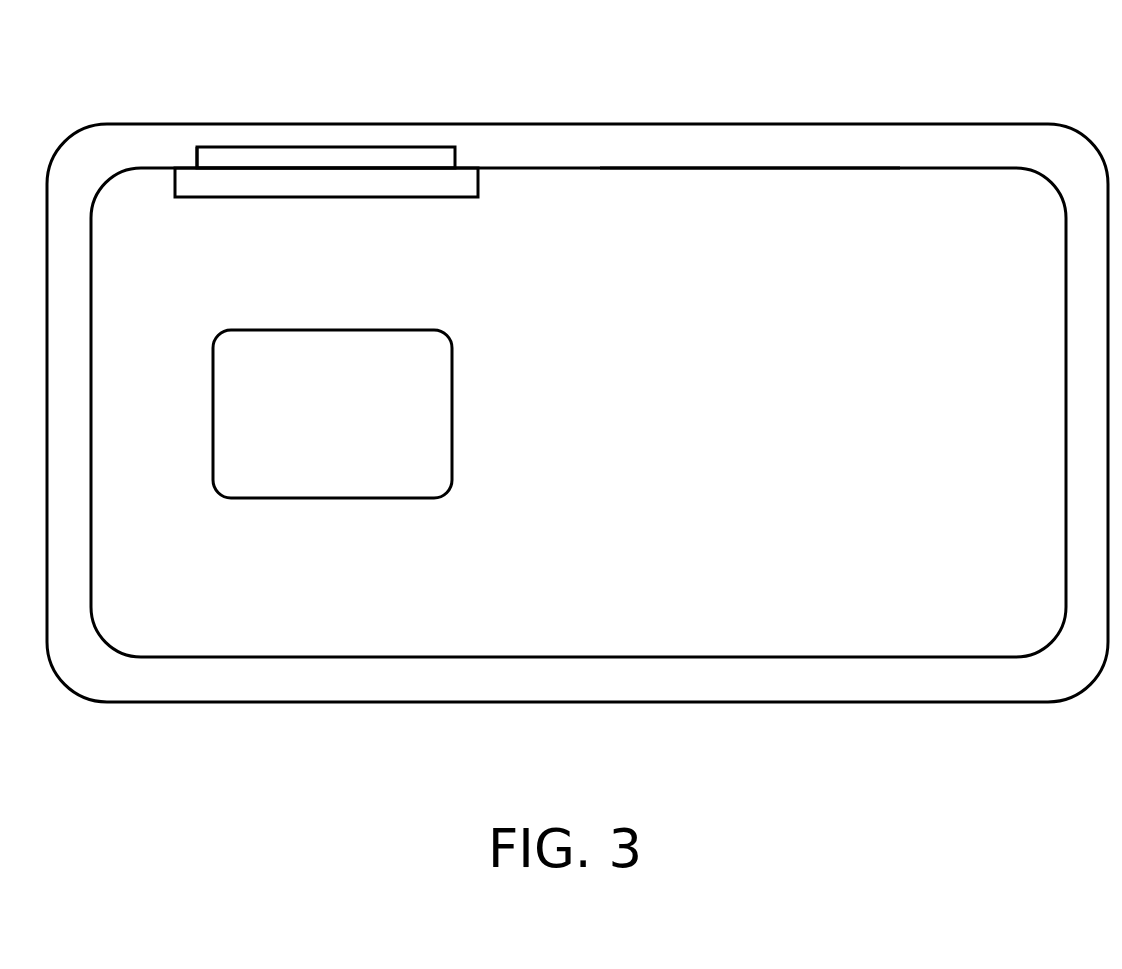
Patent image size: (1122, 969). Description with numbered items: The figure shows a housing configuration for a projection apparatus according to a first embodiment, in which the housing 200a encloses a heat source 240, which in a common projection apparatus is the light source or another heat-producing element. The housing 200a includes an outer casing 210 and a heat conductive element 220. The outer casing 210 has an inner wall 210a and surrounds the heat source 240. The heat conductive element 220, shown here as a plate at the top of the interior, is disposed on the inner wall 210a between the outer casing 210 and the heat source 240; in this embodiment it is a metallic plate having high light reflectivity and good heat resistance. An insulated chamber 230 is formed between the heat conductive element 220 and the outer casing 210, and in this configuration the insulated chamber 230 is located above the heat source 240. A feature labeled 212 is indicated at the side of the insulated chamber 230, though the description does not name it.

The housing 200a is at (500, 55).
The outer casing 210 is at (605, 144).
The inner wall 210a is at (733, 167).
The side surface 212 is at (198, 158).
The heat conductive element 220 is at (478, 182).
The insulated chamber 230 is at (378, 160).
The heat source 240 is at (348, 436).